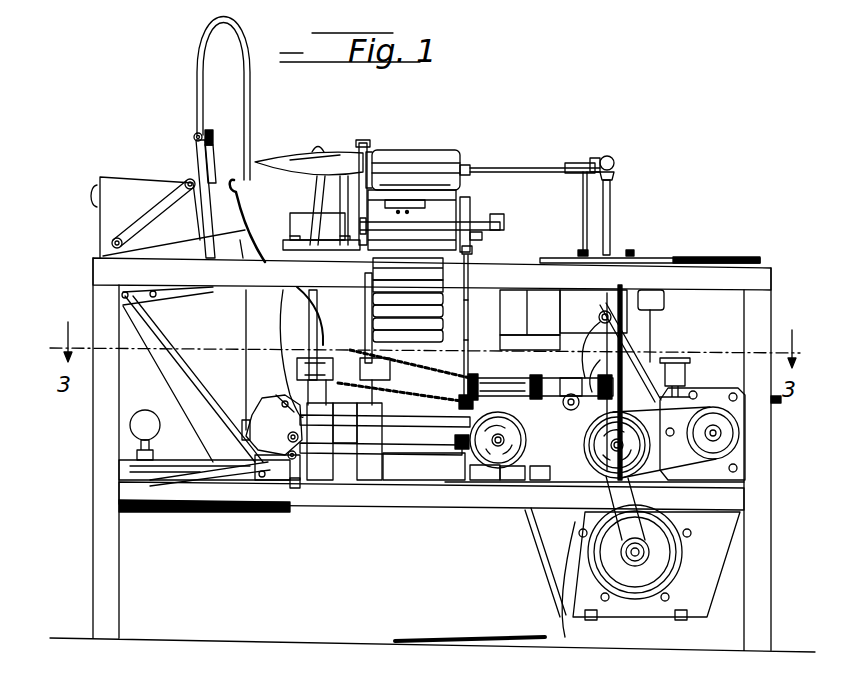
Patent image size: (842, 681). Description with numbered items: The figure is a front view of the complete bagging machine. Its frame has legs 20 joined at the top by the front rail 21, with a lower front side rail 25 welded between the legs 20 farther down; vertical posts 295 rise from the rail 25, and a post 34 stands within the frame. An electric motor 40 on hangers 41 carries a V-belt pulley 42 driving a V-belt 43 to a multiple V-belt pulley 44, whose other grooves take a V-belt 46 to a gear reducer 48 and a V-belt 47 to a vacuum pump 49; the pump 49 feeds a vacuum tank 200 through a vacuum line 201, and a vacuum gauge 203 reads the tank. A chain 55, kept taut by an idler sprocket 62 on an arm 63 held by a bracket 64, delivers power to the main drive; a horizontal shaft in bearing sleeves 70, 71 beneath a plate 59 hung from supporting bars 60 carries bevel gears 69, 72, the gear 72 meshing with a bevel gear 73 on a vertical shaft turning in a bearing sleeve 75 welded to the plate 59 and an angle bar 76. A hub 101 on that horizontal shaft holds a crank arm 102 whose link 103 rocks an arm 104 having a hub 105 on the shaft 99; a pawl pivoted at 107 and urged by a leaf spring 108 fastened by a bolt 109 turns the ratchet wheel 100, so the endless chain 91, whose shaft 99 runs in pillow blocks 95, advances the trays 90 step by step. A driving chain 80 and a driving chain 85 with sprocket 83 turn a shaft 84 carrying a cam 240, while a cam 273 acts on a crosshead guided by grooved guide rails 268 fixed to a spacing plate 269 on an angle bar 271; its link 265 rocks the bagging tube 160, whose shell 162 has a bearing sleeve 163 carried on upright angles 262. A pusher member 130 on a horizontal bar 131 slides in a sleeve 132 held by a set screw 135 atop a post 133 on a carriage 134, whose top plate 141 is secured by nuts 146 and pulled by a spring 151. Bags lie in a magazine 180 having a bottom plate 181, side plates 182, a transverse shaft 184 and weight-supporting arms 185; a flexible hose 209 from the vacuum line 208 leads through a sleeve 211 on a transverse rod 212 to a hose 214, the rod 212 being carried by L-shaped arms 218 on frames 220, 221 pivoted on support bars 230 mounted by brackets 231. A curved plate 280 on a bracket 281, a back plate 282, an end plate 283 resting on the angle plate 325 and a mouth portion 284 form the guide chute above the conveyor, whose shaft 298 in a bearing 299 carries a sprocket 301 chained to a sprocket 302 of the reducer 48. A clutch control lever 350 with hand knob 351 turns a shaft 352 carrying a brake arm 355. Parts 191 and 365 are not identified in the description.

The legs 20 is at (98, 553).
The front rail 21 is at (740, 288).
The lower front side rail 25 is at (428, 498).
The vacuum tank 200 is at (125, 466).
The flexible hose 209 is at (206, 33).
The transverse rod 212 is at (194, 135).
The sleeve 211 is at (213, 137).
The hose 214 is at (205, 158).
The L-shaped arms 218 is at (206, 228).
The magazine 180 is at (143, 210).
The side plates 182 is at (100, 182).
The bottom plate 181 is at (185, 258).
The weight-supporting arms 185 is at (145, 213).
The transverse shaft 184 is at (112, 243).
The hook 191 is at (92, 192).
The bagging tube 160 is at (297, 150).
The semi-conical shell 162 is at (319, 148).
The bearing sleeve 163 is at (362, 143).
The curved plate 280 is at (250, 203).
The upright angles 262 is at (345, 190).
The angle bar 271 is at (298, 227).
The spacing plate 269 is at (304, 240).
The trays 90 is at (428, 156).
The pusher member 130 is at (463, 165).
The horizontal bar 131 is at (536, 168).
The set screw 135 is at (578, 163).
The sleeve 132 is at (596, 158).
The hand knob 351 is at (614, 164).
The clutch control lever 350 is at (611, 192).
The post 133 is at (583, 198).
The top plate 141 is at (578, 251).
The nuts 146 is at (560, 256).
The carriage 134 is at (632, 250).
The spring 151 is at (716, 258).
The endless chain 91 is at (396, 264).
The link 265 is at (405, 207).
The pillow blocks 95 is at (370, 226).
The shaft 99 is at (500, 214).
The five-toothed ratchet wheel 100 is at (470, 200).
The hub 105 is at (482, 235).
The pivot 107 is at (472, 250).
The arm 104 is at (468, 278).
The leaf spring 108 is at (443, 273).
The bolt 109 is at (443, 287).
The mouth portion 284 is at (370, 284).
The supporting bars 60 is at (505, 303).
The link 103 is at (468, 327).
The plate 59 is at (505, 348).
The post 34 is at (620, 318).
The shaft 352 is at (612, 310).
The bearing sleeve 75 is at (620, 290).
The bevel gear 73 is at (622, 392).
The angle bar 76 is at (648, 290).
The brake arm 355 is at (652, 348).
The vacuum pump 49 is at (735, 393).
The bearing sleeve 70 is at (530, 388).
The bevel gear 69 is at (538, 376).
The idler sprocket 62 is at (590, 392).
The bearing sleeve 71 is at (566, 376).
The bevel gear 72 is at (600, 378).
The hub 101 is at (468, 378).
The crank arm 102 is at (462, 403).
The driving chain 80 is at (424, 362).
The angle plate 325 is at (356, 390).
The sprocket 301 is at (445, 418).
The shaft 298 is at (425, 428).
The second sprocket 302 is at (456, 441).
The vacuum line 201 is at (428, 458).
The bearing 299 is at (520, 430).
The gear reducer 48 is at (475, 467).
The V-belt 46 is at (512, 480).
The arm 63 is at (540, 480).
The bracket 64 is at (545, 488).
The multiple V-belt pulley 44 is at (600, 480).
The V-belt 47 is at (710, 470).
The belt 365 is at (650, 480).
The chain 55 is at (572, 480).
The electric motor 40 is at (688, 556).
The V-belt pulley 42 is at (632, 566).
The V-belt 43 is at (650, 520).
The hangers 41 is at (540, 538).
The cam 273 is at (265, 298).
The vacuum line 208 is at (245, 322).
The frame 221 is at (205, 360).
The frame 220 is at (167, 392).
The vacuum gauge 203 is at (152, 430).
The sprocket 83 is at (285, 430).
The driving chain 85 is at (282, 402).
The shaft 84 is at (298, 440).
The vertical posts 295 is at (360, 478).
The support bars 230 is at (212, 478).
The cam 240 is at (263, 480).
The brackets 231 is at (295, 490).
The grooved guide rails 268 is at (318, 298).
The end plate 283 is at (322, 316).
The back plate 282 is at (318, 288).
The bracket 281 is at (241, 258).